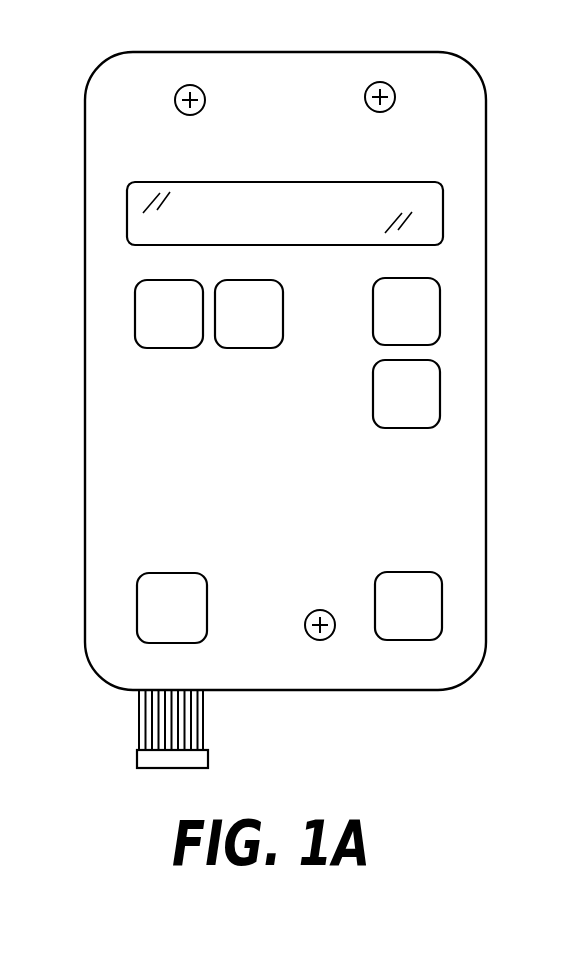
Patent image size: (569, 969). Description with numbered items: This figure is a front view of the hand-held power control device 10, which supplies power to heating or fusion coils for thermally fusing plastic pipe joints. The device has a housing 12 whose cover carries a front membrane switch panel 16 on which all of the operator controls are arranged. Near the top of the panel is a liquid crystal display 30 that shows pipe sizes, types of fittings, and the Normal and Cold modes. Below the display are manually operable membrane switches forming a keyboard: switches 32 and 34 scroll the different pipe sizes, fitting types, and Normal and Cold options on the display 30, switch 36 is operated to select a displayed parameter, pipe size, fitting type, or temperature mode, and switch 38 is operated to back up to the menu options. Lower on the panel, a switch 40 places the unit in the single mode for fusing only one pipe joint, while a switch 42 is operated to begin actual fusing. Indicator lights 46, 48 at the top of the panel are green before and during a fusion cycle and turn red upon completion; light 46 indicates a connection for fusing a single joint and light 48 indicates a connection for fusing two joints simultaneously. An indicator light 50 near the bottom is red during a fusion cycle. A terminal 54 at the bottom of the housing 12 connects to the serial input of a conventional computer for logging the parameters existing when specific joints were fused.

The power control device 10 is at (262, 348).
The housing 12 is at (226, 44).
The front membrane switch panel 16 is at (432, 522).
The liquid crystal display 30 is at (130, 200).
The scroll switch 32 is at (388, 287).
The scroll switch 34 is at (410, 420).
The select switch 36 is at (223, 287).
The previous switch 38 is at (142, 323).
The single mode switch 40 is at (157, 607).
The start switch 42 is at (432, 618).
The indicator light 46 is at (177, 90).
The indicator light 48 is at (395, 92).
The indicator light 50 is at (320, 640).
The terminal 54 is at (140, 757).